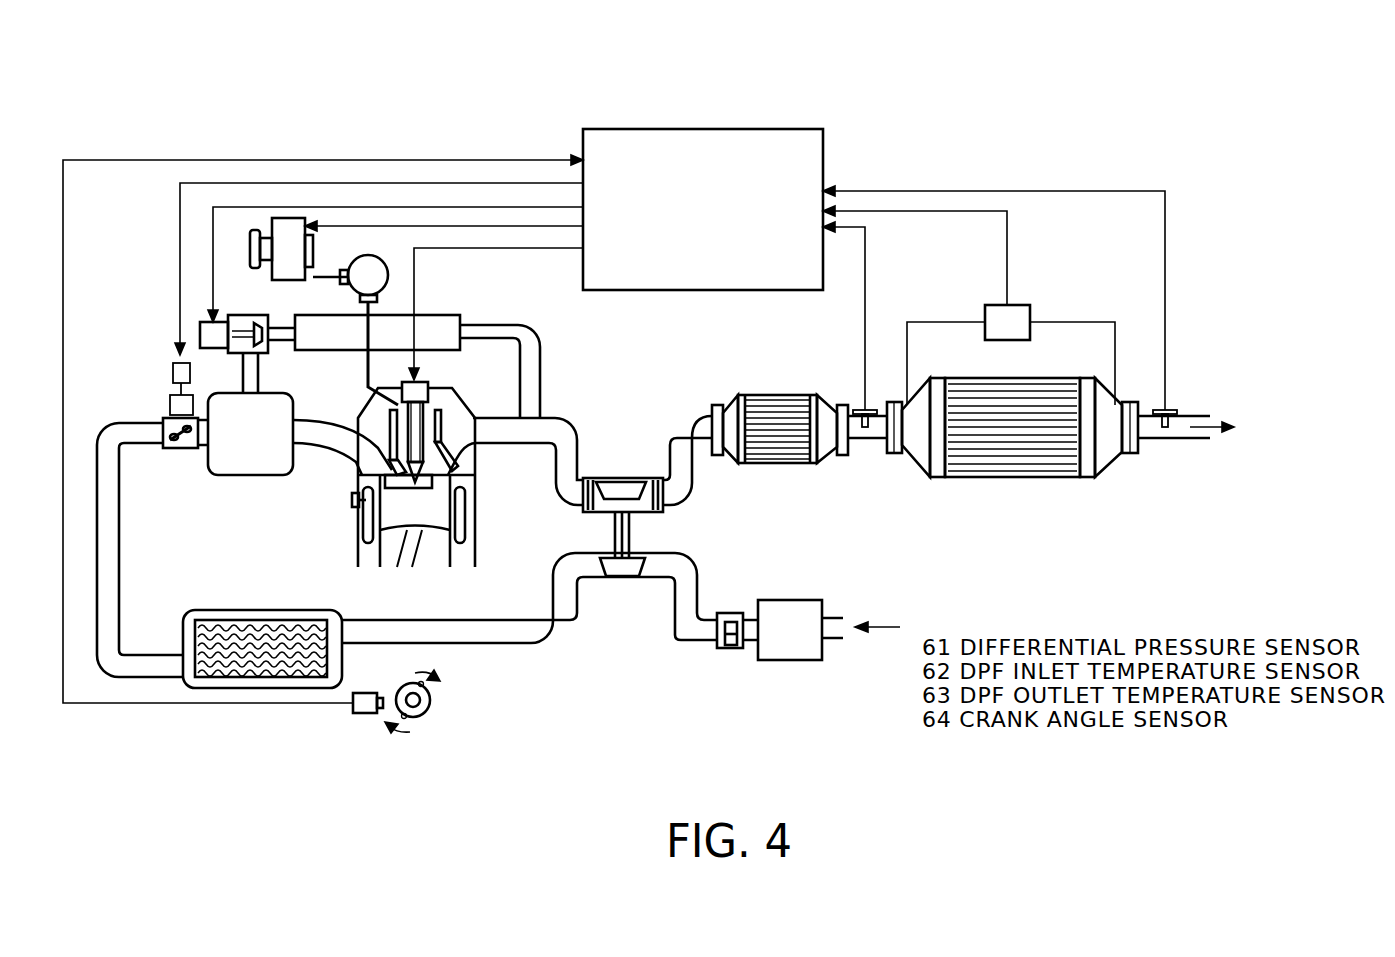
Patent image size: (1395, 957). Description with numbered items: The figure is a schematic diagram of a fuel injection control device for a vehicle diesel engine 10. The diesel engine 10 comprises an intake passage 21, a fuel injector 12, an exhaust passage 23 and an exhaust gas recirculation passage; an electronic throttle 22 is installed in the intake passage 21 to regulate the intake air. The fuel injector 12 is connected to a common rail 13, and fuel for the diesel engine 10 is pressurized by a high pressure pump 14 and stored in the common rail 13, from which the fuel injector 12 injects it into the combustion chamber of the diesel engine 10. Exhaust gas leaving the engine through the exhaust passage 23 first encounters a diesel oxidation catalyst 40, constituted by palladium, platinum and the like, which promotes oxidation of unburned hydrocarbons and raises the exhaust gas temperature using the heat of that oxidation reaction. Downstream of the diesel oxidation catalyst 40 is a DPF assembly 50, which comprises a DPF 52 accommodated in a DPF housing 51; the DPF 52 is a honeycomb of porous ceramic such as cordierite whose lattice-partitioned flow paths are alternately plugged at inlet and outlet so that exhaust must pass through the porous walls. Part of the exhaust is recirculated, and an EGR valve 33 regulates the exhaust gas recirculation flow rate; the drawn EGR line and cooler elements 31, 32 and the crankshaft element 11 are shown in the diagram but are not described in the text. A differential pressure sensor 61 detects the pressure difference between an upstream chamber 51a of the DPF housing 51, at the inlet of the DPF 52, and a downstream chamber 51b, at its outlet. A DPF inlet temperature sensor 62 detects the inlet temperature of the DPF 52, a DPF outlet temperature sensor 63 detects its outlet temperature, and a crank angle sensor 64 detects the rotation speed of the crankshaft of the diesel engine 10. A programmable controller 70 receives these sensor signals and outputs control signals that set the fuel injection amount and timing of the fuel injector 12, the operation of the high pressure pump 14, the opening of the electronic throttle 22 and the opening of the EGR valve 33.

The diesel engine 10 is at (484, 484).
The crankshaft 11 is at (431, 705).
The fuel injector 12 is at (428, 406).
The common rail 13 is at (376, 278).
The high pressure pump 14 is at (290, 281).
The intake passage 21 is at (305, 435).
The electronic throttle 22 is at (172, 450).
The exhaust passage 23 is at (555, 422).
The EGR passage 31 is at (532, 360).
The EGR cooler 32 is at (450, 318).
The EGR valve 33 is at (262, 320).
The diesel oxidation catalyst 40 is at (770, 395).
The DPF assembly 50 is at (1060, 496).
The upstream chamber 51a is at (915, 452).
The DPF housing 51 is at (978, 480).
The DPF 52 is at (1037, 468).
The downstream chamber 51b is at (1105, 469).
The differential pressure sensor 61 is at (1016, 308).
The DPF inlet temperature sensor 62 is at (870, 405).
The DPF outlet temperature sensor 63 is at (1168, 407).
The crank angle sensor 64 is at (364, 715).
The programmable controller 70 is at (780, 130).